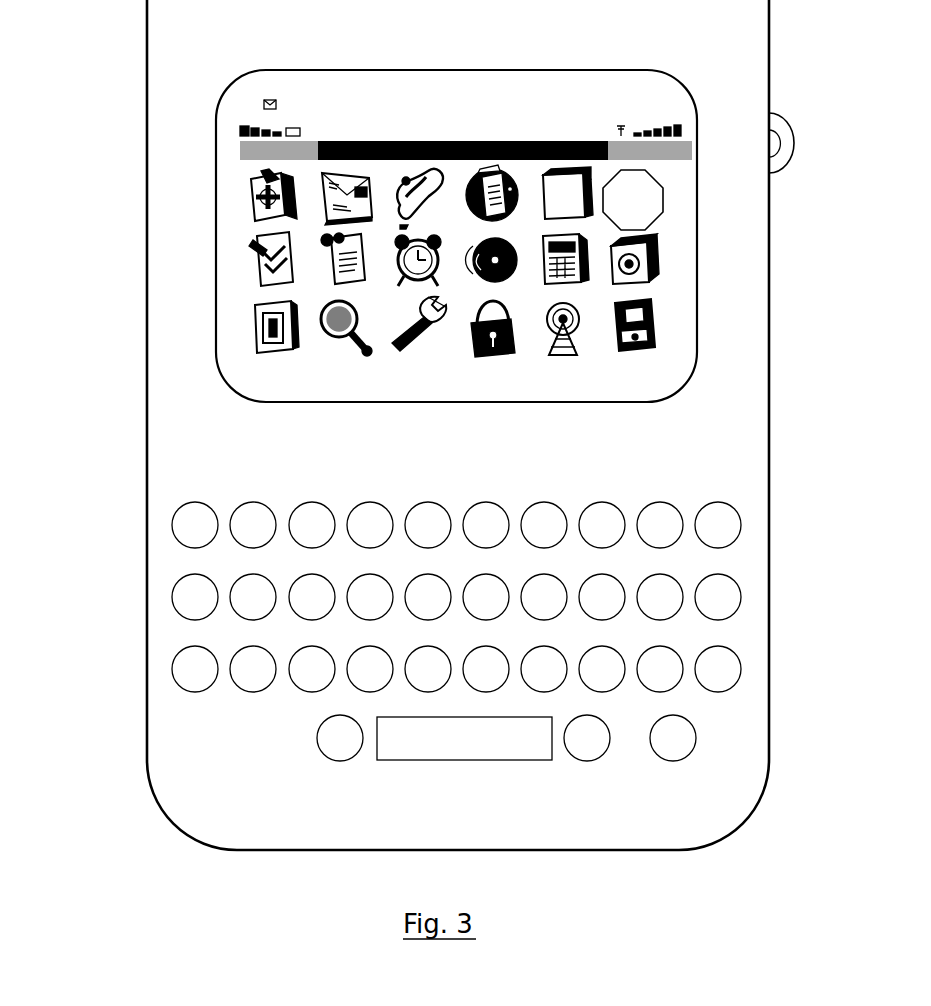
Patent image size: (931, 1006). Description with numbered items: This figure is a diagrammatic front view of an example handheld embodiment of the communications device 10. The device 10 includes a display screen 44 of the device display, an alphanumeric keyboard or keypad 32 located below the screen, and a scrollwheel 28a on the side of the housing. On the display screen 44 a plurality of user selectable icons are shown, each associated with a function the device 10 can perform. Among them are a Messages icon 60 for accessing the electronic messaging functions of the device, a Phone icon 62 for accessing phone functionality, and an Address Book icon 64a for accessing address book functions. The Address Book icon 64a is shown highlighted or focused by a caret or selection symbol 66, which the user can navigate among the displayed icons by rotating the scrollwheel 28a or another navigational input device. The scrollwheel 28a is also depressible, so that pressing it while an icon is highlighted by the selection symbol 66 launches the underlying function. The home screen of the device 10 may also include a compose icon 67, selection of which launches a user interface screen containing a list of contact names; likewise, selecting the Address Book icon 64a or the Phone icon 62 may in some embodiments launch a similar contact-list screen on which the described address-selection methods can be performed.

The handheld communications device 10 is at (118, 479).
The scrollwheel 28a is at (790, 163).
The alphanumeric keyboard 32 is at (748, 632).
The display screen 44 is at (460, 210).
The Messages icon 60 is at (322, 173).
The Phone icon 62 is at (410, 173).
The Address Book icon 64a is at (470, 172).
The selection symbol 66 is at (502, 167).
The compose icon 67 is at (662, 218).